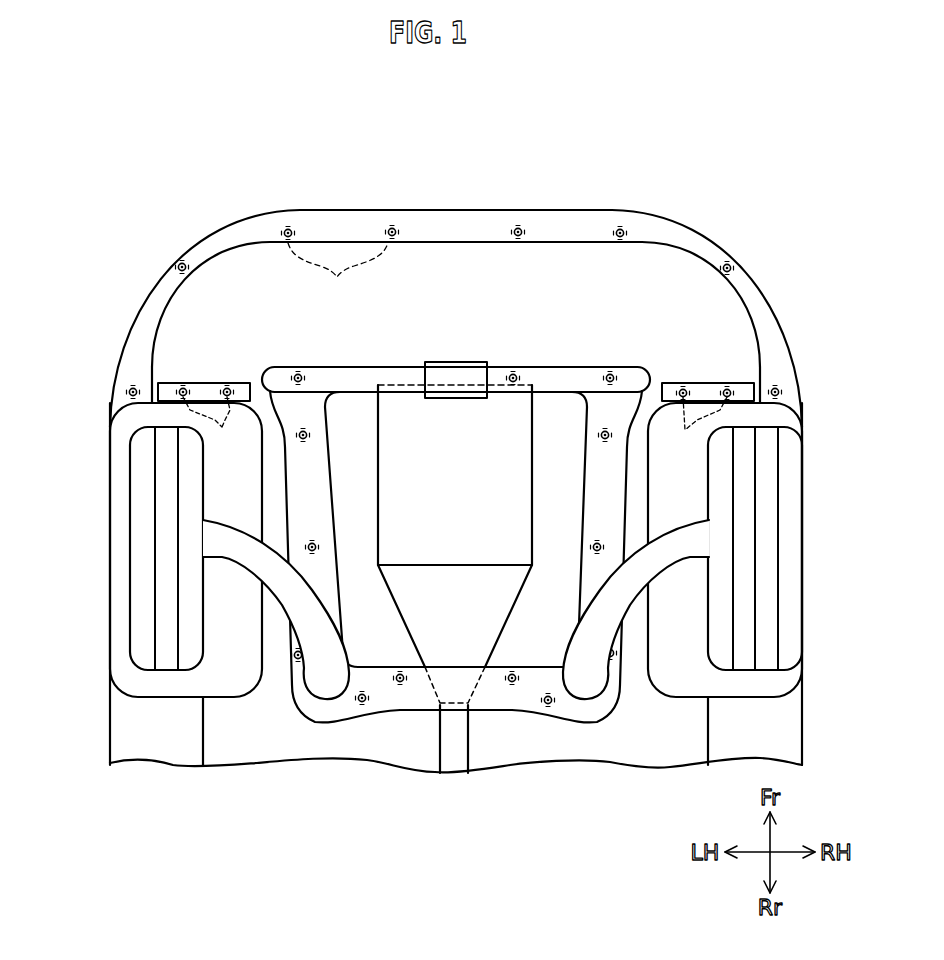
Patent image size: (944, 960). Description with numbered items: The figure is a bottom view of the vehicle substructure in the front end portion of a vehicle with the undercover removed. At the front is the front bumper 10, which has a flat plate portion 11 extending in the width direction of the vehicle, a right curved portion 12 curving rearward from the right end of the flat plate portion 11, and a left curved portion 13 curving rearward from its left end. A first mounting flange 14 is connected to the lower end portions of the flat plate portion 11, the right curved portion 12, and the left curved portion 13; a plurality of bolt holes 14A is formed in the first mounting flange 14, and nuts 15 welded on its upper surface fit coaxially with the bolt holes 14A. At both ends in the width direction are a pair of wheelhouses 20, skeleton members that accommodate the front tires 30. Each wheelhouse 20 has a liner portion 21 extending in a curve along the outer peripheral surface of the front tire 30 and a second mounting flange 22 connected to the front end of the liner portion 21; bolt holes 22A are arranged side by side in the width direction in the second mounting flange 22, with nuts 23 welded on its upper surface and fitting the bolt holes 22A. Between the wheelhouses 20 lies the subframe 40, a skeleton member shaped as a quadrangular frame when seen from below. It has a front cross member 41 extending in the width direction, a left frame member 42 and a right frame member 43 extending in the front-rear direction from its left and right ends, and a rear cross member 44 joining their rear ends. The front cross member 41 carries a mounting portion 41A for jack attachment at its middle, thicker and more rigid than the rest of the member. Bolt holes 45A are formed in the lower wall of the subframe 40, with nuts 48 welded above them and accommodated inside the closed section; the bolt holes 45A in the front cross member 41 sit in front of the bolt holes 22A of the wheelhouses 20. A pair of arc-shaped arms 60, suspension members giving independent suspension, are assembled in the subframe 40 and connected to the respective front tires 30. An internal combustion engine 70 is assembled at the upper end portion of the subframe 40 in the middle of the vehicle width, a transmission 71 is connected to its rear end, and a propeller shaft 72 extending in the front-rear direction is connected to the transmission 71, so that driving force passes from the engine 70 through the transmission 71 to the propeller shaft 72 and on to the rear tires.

The front bumper 10 is at (451, 295).
The flat plate portion 11 is at (465, 210).
The right curved portion 12 is at (748, 272).
The left curved portion 13 is at (160, 287).
The first mounting flange 14 is at (212, 245).
The bolt holes 14A is at (392, 232).
The nuts 15 is at (338, 271).
The wheelhouses 20 is at (455, 531).
The liner portion 21 is at (112, 432).
The second mounting flange 22 is at (168, 382).
The bolt holes 22A is at (183, 380).
The nuts 23 is at (455, 426).
The front tires 30 is at (117, 563).
The subframe 40 is at (456, 524).
The front cross member 41 is at (362, 365).
The mounting portion 41A is at (455, 362).
The left frame member 42 is at (317, 475).
The right frame member 43 is at (595, 473).
The rear cross member 44 is at (380, 663).
The bolt holes 45A is at (298, 373).
The nuts 48 is at (305, 381).
The arms 60 is at (245, 562).
The internal combustion engine 70 is at (510, 528).
The transmission 71 is at (493, 613).
The propeller shaft 72 is at (463, 742).